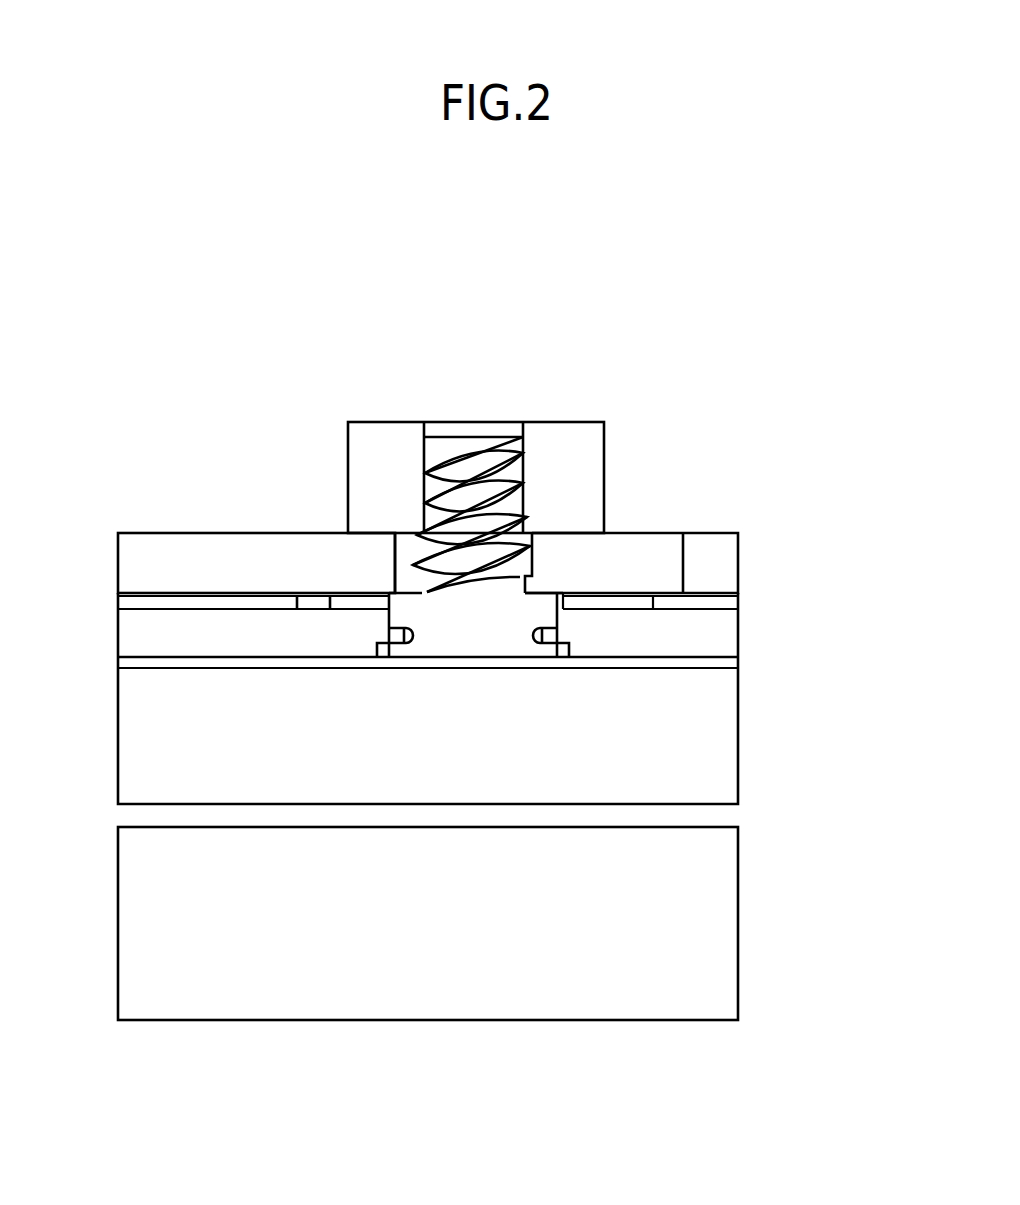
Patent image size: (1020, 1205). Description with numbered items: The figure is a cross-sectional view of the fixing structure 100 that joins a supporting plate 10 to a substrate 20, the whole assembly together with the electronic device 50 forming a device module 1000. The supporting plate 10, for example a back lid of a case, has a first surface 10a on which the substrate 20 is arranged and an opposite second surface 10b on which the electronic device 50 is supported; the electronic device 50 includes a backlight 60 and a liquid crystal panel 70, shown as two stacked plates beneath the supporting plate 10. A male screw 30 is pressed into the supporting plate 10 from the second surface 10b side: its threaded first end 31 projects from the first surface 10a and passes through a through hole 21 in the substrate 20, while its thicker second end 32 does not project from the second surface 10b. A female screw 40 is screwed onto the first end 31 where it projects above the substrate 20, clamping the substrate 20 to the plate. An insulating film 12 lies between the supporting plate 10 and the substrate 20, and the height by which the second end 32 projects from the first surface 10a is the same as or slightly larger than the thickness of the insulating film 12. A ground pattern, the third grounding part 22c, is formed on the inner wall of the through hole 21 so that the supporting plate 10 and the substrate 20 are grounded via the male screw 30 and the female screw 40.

The device module 1000 is at (872, 422).
The fixing structure 100 is at (676, 278).
The female screw 40 is at (375, 432).
The male screw 30 is at (578, 300).
The first end 31 is at (480, 465).
The second end 32 is at (482, 612).
The substrate 20 is at (132, 561).
The through hole 21 is at (397, 563).
The third grounding part 22c is at (643, 555).
The insulating film 12 is at (132, 604).
The supporting plate 10 is at (132, 638).
The first surface 10a is at (331, 596).
The second surface 10b is at (187, 660).
The electronic device 50 is at (808, 707).
The backlight 60 is at (720, 720).
The liquid crystal panel 70 is at (720, 895).